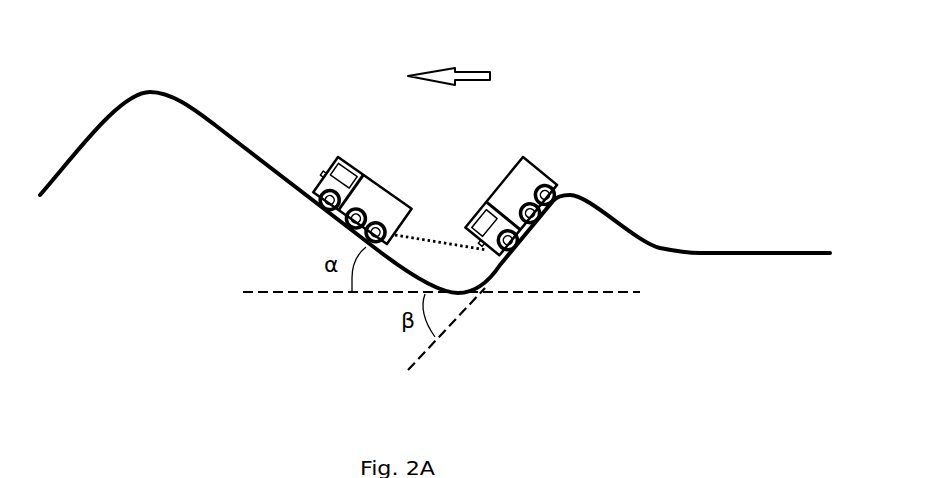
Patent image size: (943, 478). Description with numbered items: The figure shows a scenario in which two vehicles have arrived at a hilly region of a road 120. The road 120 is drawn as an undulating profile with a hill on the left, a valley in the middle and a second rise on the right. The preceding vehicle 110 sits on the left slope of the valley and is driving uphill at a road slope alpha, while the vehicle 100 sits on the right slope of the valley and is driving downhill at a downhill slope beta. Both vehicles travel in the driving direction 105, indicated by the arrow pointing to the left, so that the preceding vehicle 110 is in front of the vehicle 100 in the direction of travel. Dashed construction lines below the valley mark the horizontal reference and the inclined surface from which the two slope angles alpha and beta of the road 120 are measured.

The vehicle 100 is at (491, 196).
The driving direction 105 is at (449, 62).
The preceding vehicle 110 is at (359, 163).
The road 120 is at (183, 108).